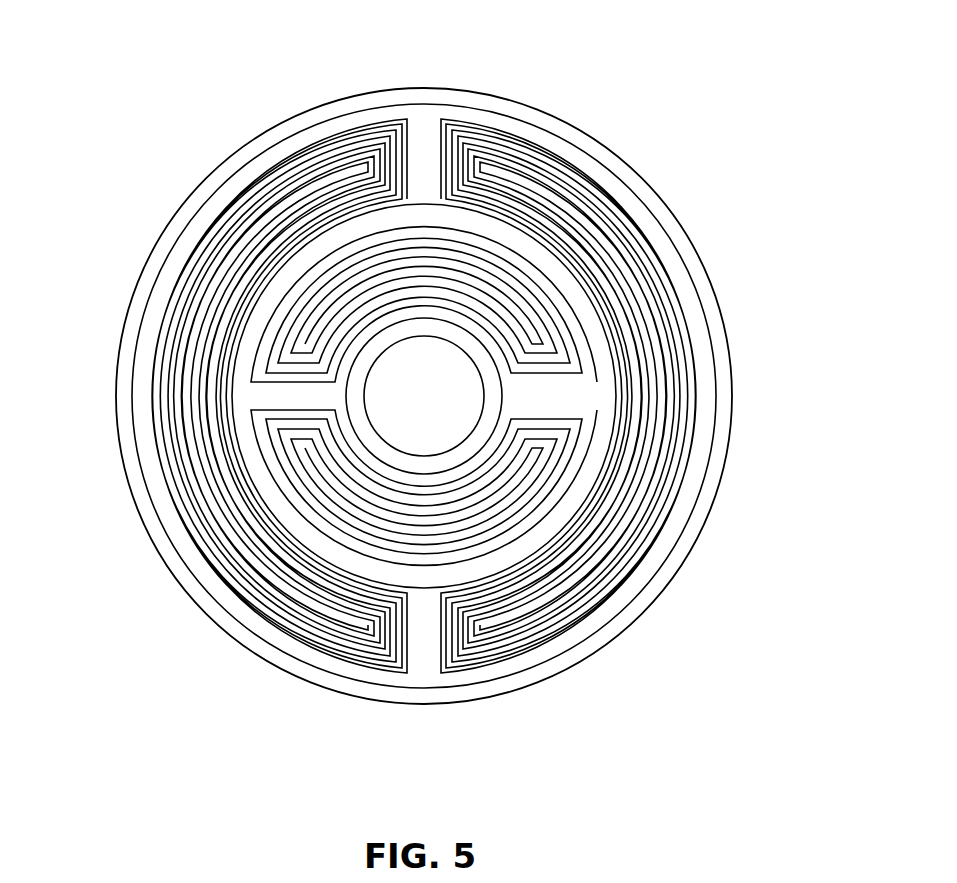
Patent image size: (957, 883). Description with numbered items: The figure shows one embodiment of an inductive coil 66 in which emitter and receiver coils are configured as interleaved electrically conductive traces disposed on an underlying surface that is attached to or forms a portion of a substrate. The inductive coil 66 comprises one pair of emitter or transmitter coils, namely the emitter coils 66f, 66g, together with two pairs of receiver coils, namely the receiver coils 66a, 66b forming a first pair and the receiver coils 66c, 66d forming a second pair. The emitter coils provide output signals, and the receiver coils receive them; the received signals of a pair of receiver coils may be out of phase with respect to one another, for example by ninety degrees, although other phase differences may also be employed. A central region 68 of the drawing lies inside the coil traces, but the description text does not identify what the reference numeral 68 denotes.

The inductive coil 66 is at (415, 357).
The receiver coil 66a is at (537, 319).
The receiver coil 66b is at (543, 489).
The receiver coil 66c is at (185, 521).
The receiver coil 66d is at (700, 384).
The emitter coil 66f is at (320, 243).
The emitter coil 66g is at (663, 573).
The central aperture 68 is at (398, 397).